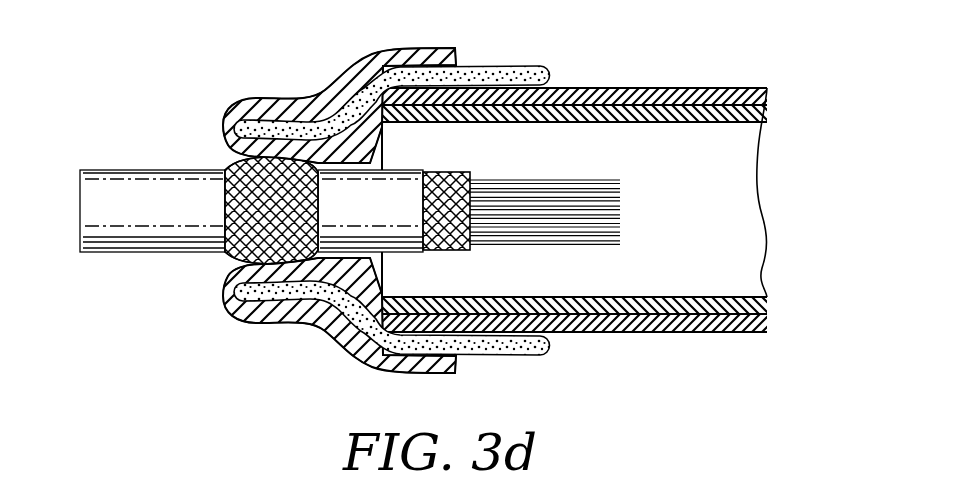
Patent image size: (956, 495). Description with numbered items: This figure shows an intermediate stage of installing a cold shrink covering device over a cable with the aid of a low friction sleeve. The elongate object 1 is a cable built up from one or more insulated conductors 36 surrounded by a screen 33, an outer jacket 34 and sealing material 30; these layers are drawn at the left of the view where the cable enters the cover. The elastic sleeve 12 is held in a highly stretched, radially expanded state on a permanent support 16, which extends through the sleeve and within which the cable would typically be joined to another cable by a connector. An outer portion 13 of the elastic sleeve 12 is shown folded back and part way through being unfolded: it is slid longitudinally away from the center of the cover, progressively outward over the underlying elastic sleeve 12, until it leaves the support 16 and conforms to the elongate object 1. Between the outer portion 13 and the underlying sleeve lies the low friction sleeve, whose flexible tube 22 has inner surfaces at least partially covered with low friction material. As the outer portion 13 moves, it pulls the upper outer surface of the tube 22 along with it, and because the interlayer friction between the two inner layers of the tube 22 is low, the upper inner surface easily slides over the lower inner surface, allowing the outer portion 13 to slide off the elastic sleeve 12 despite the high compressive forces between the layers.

The elongate object 1 is at (158, 193).
The elastic sleeve 12 is at (702, 88).
The outer portion of the elastic sleeve 13 is at (352, 80).
The support 16 is at (723, 117).
The tube 22 is at (530, 345).
The sealing material 30 is at (263, 137).
The screen 33 is at (455, 188).
The outer jacket 34 is at (400, 187).
The insulated conductors 36 is at (598, 209).